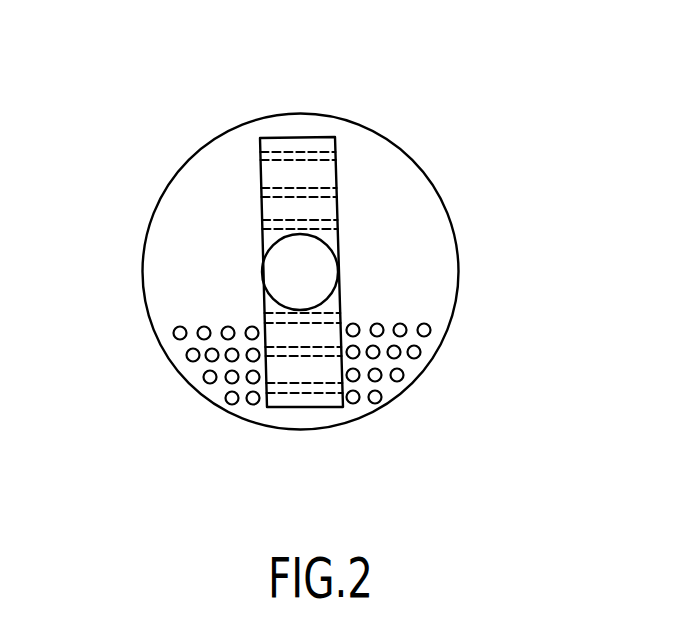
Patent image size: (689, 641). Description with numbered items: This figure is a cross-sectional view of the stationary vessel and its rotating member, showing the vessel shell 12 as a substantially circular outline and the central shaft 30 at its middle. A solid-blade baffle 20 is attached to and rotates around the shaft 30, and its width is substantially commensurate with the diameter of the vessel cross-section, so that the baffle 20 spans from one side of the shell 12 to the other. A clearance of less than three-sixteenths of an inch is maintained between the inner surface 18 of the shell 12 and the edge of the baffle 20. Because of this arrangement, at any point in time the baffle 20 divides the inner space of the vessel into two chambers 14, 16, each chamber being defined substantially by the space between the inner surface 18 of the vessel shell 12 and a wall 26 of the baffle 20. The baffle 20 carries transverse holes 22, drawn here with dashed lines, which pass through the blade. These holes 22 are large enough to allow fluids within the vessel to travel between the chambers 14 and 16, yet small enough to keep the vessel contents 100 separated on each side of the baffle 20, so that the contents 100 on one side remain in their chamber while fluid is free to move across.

The vessel shell 12 is at (430, 365).
The chamber 14 is at (213, 175).
The chamber 16 is at (440, 237).
The inner surface 18 is at (458, 312).
The solid-blade baffle 20 is at (297, 143).
The transverse holes 22 is at (268, 190).
The wall 26 is at (337, 177).
The central shaft 30 is at (288, 282).
The vessel contents 100 is at (230, 380).